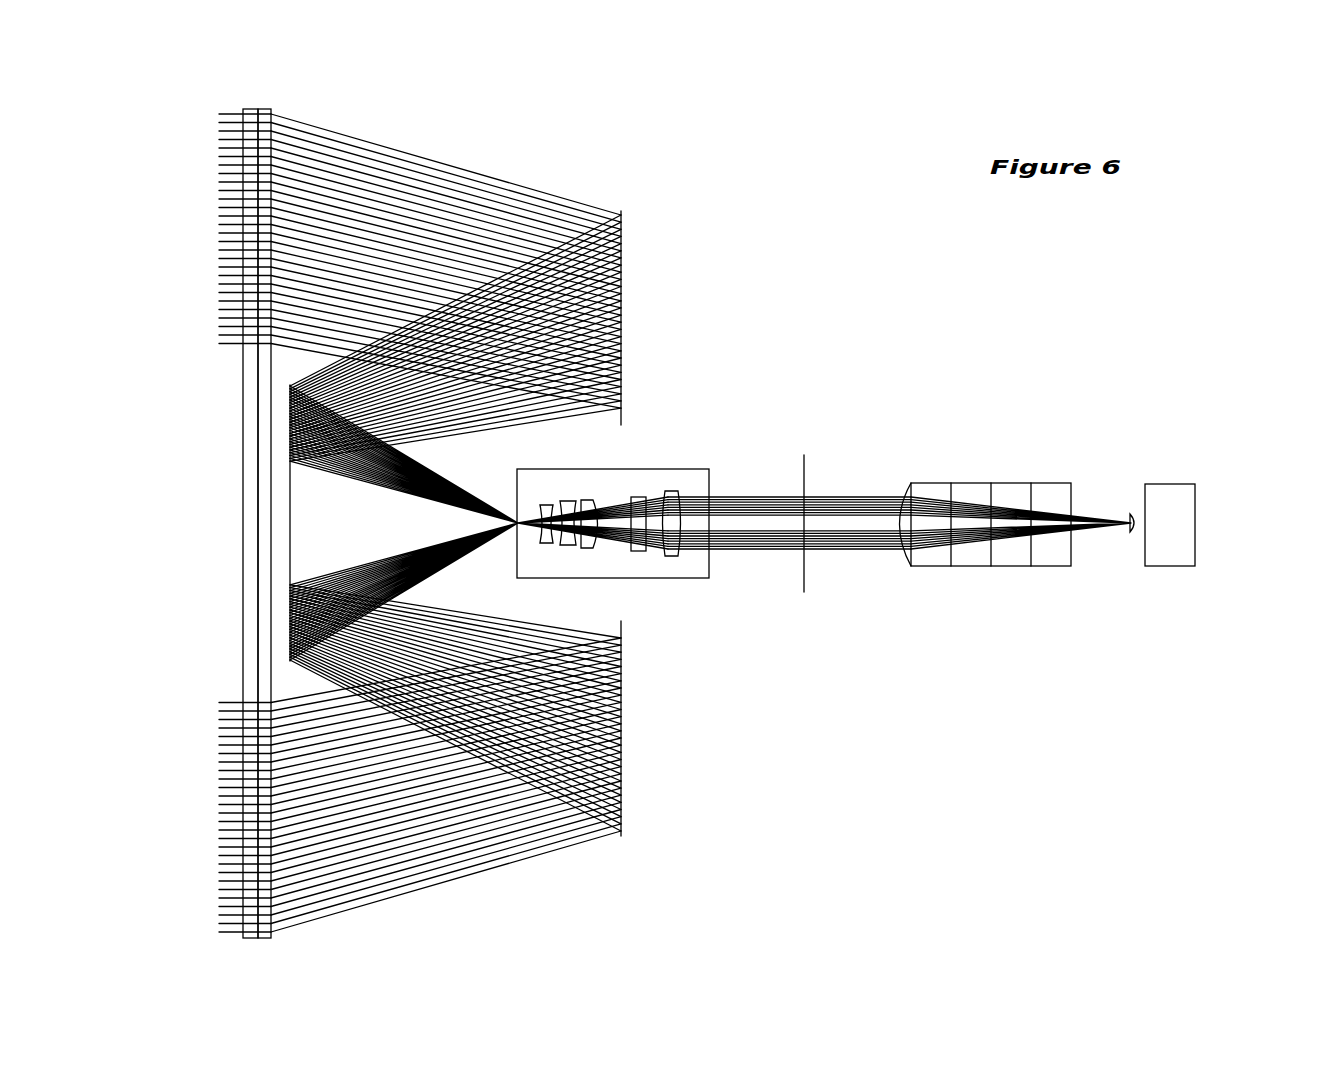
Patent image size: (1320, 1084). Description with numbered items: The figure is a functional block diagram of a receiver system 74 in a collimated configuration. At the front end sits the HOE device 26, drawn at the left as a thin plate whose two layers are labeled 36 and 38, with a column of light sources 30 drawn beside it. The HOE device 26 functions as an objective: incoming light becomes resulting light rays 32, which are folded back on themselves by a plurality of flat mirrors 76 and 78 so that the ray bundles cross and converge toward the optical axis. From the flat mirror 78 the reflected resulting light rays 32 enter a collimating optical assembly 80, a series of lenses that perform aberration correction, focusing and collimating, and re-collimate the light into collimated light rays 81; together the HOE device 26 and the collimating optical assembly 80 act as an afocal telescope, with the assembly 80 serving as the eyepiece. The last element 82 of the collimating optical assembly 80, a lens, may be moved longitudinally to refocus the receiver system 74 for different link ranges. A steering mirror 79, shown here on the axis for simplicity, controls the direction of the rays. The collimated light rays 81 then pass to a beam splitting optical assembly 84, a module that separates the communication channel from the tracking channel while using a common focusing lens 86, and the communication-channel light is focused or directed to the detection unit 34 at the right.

The HOE device 26 is at (308, 538).
The light emitters 30 is at (230, 523).
The resulting light rays 32 is at (507, 164).
The detection unit 34 is at (1196, 540).
The substrate 36 is at (243, 930).
The microlens array 38 is at (257, 930).
The receiver system 74 is at (908, 802).
The flat mirror 76 is at (613, 805).
The flat mirror 78 is at (282, 513).
The steering mirror 79 is at (809, 450).
The collimating optical assembly 80 is at (694, 478).
The collimated light rays 81 is at (827, 553).
The last element 82 is at (662, 549).
The beam splitting optical assembly 84 is at (1016, 570).
The lens 86 is at (898, 478).